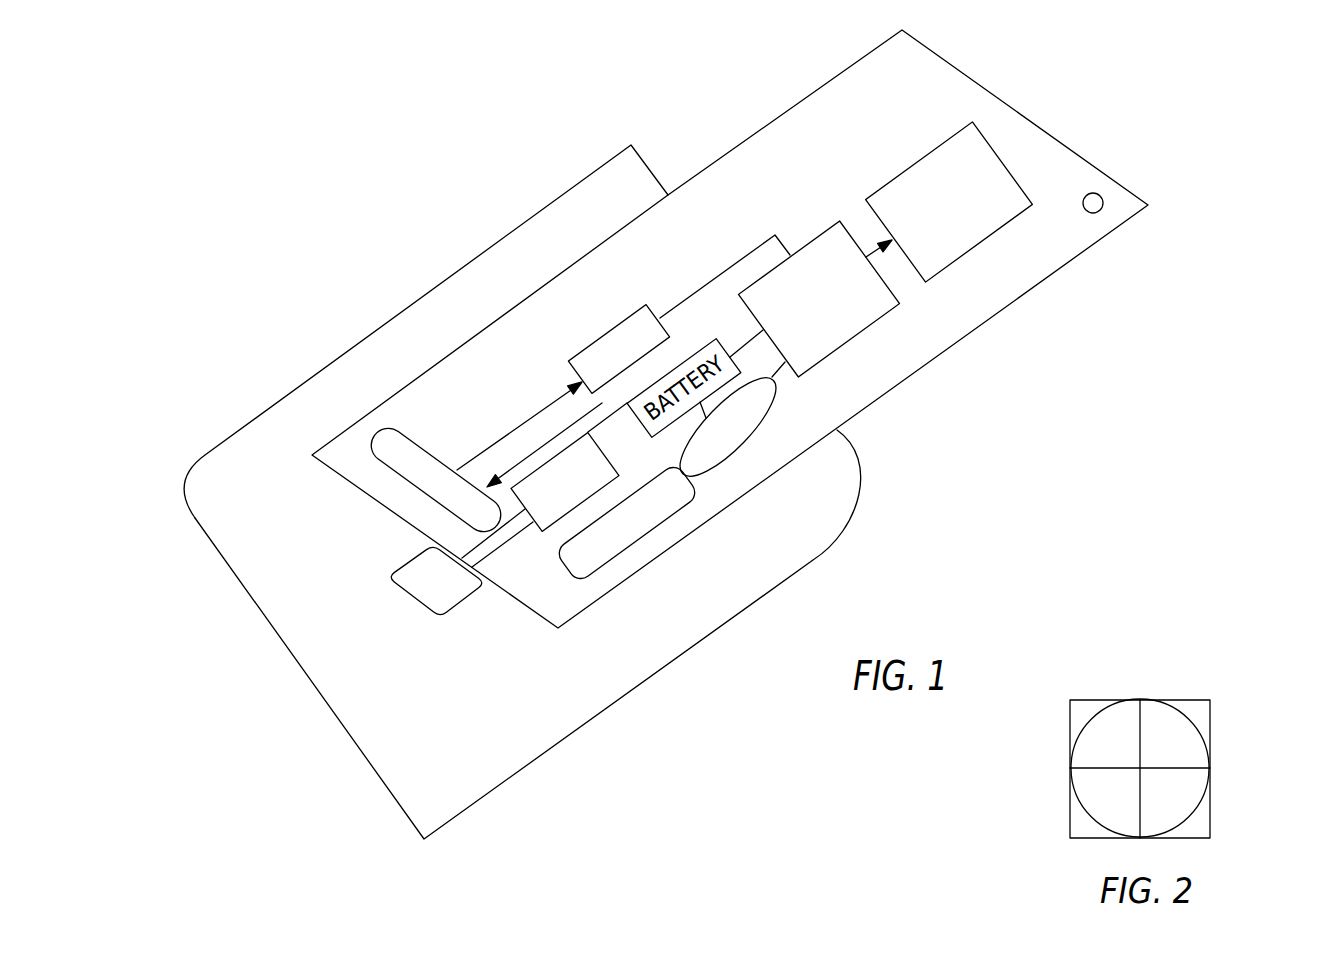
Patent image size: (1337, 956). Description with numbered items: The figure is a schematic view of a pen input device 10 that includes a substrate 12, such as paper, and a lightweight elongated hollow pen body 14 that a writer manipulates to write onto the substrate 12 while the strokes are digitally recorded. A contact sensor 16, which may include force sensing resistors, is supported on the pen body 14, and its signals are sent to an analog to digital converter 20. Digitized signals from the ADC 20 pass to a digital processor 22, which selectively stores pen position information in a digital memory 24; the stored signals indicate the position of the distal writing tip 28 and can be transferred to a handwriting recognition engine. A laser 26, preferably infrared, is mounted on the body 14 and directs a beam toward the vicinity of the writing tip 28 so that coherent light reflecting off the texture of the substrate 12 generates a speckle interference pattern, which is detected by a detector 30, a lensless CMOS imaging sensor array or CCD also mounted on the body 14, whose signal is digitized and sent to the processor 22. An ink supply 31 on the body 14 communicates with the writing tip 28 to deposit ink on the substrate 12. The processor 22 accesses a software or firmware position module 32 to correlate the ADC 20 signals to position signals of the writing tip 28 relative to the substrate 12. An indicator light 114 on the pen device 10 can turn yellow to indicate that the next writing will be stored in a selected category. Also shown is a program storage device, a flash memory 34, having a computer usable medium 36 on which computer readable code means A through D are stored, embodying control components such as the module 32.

In FIG. 1, the pen input device 10 is at (676, 434).
In FIG. 1, the substrate 12 is at (522, 492).
In FIG. 1, the pen body 14 is at (730, 329).
In FIG. 1, the contact sensor 16 is at (436, 428).
In FIG. 1, the analog to digital converter (ADC) 20 is at (586, 322).
In FIG. 1, the digital processor 22 is at (871, 345).
In FIG. 1, the digital memory 24 is at (989, 256).
In FIG. 1, the laser 26 is at (777, 482).
In FIG. 1, the distal writing tip 28 is at (396, 596).
In FIG. 1, the detector 30 is at (661, 588).
In FIG. 1, the ink supply 31 is at (565, 520).
In FIG. 1, the position module 32 is at (799, 189).
In FIG. 2, the flash memory 34 is at (1190, 732).
In FIG. 2, the computer usable medium 36 is at (1140, 732).
In FIG. 1, the indicator light 114 is at (1106, 270).